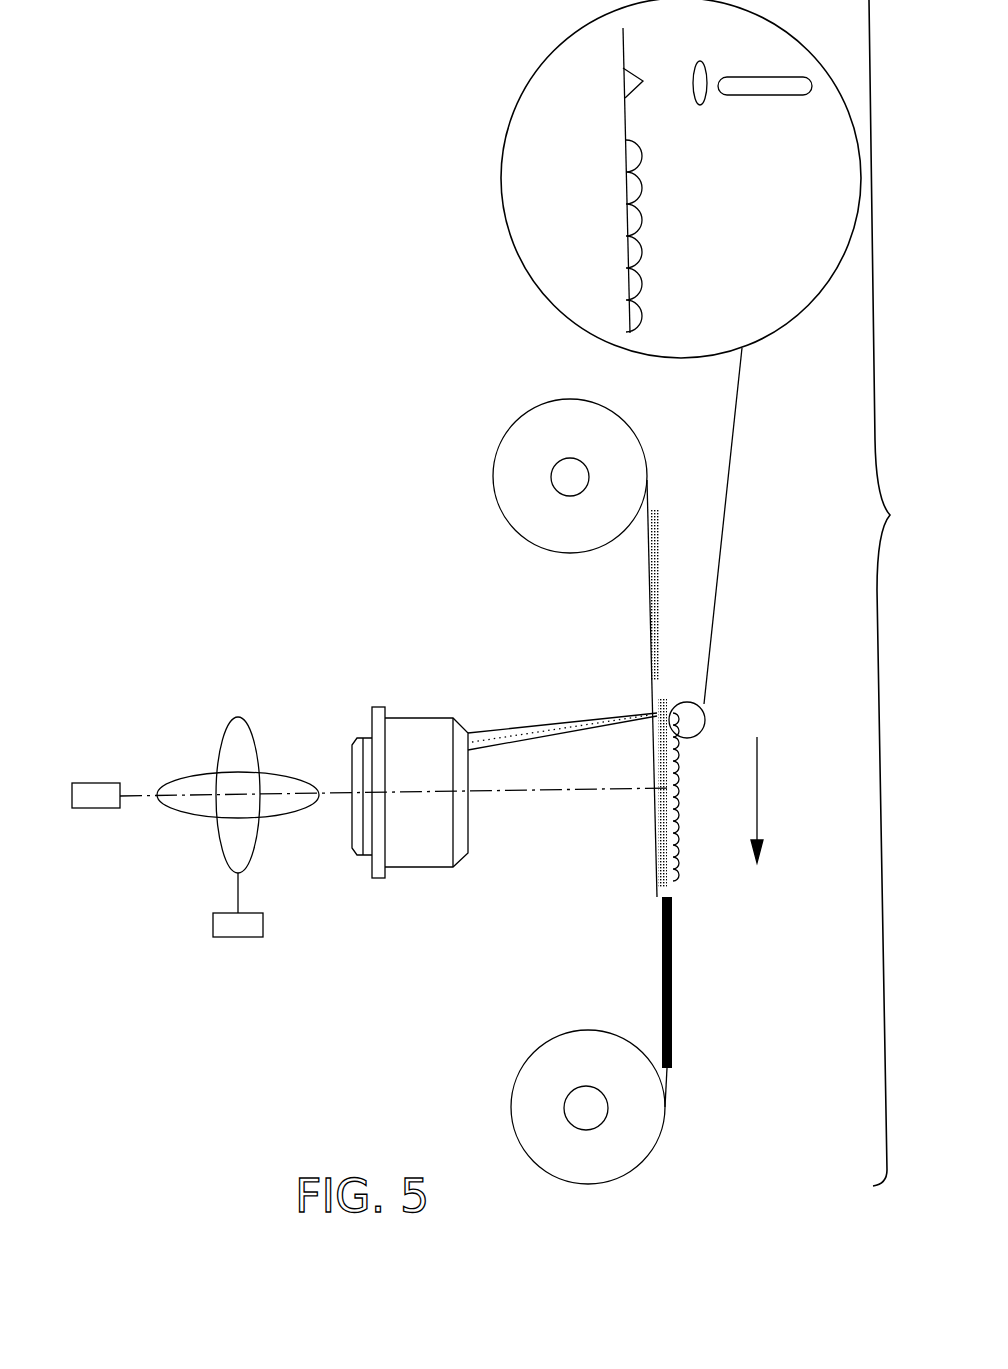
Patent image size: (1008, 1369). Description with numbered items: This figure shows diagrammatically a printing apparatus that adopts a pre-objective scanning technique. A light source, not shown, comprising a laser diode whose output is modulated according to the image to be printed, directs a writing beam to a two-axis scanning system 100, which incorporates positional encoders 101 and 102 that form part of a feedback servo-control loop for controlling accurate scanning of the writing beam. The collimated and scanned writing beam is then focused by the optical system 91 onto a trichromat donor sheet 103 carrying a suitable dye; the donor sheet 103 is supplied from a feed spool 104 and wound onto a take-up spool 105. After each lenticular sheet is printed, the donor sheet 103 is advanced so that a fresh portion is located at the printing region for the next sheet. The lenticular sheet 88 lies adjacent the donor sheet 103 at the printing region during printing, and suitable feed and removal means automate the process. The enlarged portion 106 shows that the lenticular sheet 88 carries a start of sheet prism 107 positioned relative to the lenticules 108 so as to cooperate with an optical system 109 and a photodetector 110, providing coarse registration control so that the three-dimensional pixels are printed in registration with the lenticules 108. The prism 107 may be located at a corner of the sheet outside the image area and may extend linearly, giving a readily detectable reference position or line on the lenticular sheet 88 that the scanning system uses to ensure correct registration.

The lenticular sheet 88 is at (688, 880).
The optical system 91 is at (425, 866).
The two-axis scanning system 100 is at (182, 742).
The positional encoder 101 is at (100, 815).
The positional encoder 102 is at (246, 940).
The trichromat donor sheet 103 is at (655, 832).
The feed spool 104 is at (493, 480).
The take-up spool 105 is at (557, 1063).
The enlarged portion 106 is at (502, 222).
The start of sheet prism 107 is at (635, 70).
The lenticules 108 is at (648, 228).
The optical system 109 is at (707, 72).
The photodetector 110 is at (737, 77).